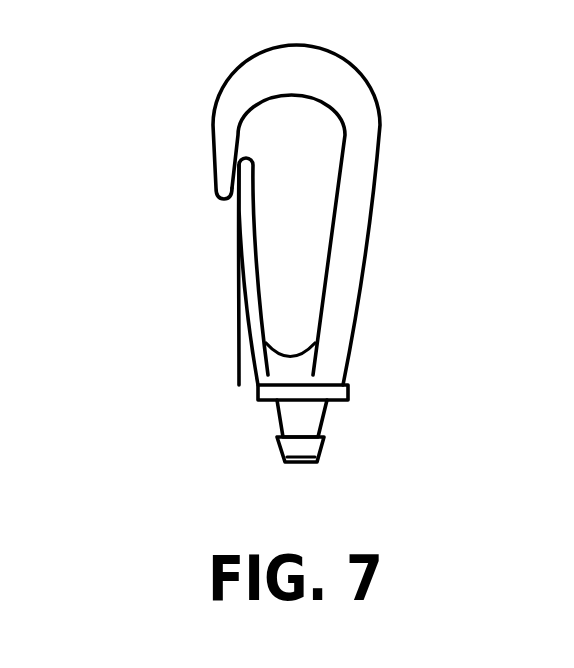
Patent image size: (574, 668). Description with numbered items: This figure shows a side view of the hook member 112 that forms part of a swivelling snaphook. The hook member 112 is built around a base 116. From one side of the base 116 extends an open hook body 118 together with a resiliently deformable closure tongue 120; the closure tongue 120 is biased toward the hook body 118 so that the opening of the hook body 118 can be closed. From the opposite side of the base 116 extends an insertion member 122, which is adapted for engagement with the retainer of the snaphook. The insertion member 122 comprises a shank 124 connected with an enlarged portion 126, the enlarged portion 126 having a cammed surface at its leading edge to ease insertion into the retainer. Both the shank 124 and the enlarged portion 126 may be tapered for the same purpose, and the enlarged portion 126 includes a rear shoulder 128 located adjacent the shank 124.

The hook member 112 is at (172, 132).
The open hook body 118 is at (345, 77).
The closure tongue 120 is at (240, 240).
The base 116 is at (260, 390).
The insertion member 122 is at (428, 386).
The shank 124 is at (327, 412).
The enlarged portion 126 is at (307, 447).
The rear shoulder 128 is at (280, 428).